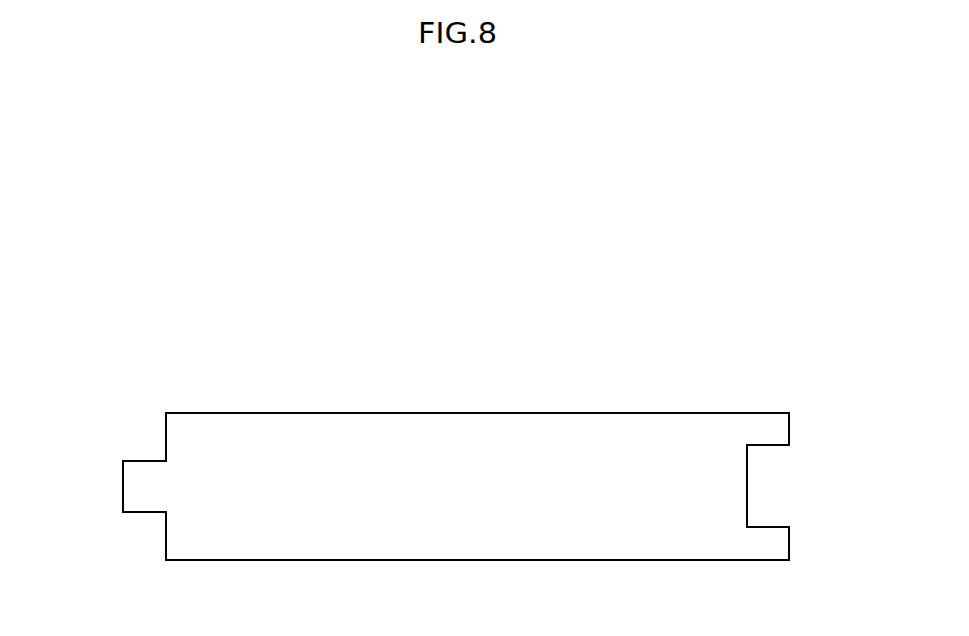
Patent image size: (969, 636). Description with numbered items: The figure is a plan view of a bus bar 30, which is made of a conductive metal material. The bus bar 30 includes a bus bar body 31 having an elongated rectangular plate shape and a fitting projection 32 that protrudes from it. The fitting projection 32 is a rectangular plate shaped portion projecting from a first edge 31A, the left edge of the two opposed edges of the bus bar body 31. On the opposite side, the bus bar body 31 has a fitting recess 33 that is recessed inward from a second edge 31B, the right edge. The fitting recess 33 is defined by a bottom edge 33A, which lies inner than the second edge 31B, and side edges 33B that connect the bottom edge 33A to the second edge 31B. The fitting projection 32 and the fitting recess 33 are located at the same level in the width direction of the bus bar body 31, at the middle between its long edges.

The bus bar 30 is at (729, 302).
The bus bar body 31 is at (458, 517).
The first edge 31A is at (163, 537).
The second edge 31B is at (790, 543).
The fitting projection 32 is at (143, 485).
The fitting recess 33 is at (780, 471).
The bottom edge 33A is at (748, 482).
The side edges 33B is at (762, 447).